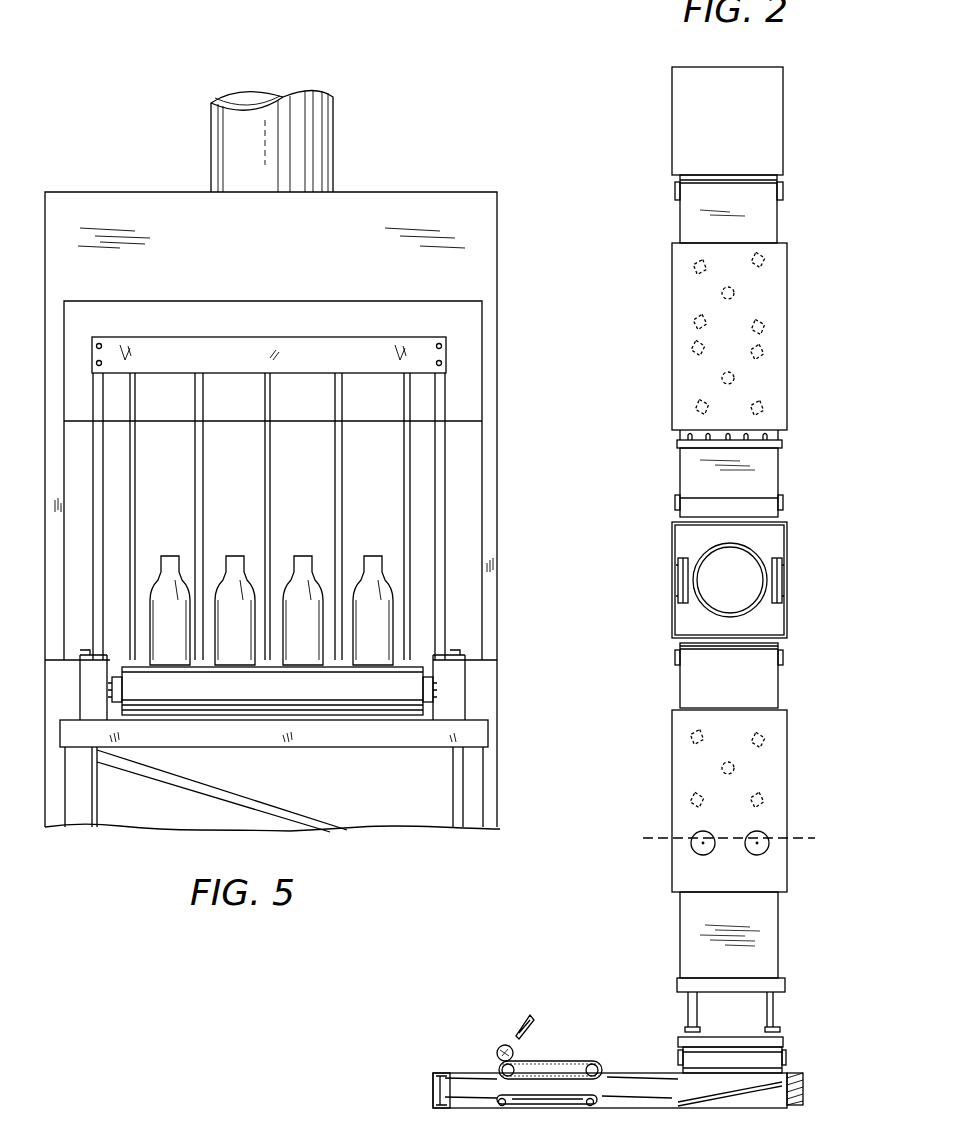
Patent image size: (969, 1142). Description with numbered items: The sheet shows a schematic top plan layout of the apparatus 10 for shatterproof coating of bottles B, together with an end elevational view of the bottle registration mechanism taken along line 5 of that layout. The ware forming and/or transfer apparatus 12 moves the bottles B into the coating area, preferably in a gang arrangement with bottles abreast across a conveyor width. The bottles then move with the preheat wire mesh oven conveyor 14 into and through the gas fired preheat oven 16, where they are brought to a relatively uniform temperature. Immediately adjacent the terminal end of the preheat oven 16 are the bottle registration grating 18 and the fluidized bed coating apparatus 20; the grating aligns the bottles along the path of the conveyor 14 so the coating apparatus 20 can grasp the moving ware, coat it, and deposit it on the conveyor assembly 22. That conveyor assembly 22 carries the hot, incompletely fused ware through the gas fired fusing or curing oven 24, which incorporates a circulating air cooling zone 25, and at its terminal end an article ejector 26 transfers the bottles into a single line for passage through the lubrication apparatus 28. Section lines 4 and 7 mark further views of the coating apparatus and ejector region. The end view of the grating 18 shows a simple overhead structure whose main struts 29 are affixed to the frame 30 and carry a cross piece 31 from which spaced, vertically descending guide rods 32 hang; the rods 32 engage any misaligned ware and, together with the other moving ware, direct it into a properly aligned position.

In FIG. 2, the apparatus 10 is at (815, 424).
In FIG. 2, the ware forming and/or transfer apparatus 12 is at (730, 131).
In FIG. 5, the preheat wire mesh oven conveyor 14 is at (317, 707).
In FIG. 2, the preheat wire mesh oven conveyor 14 is at (732, 211).
In FIG. 2, the gas fired preheat oven 16 is at (783, 304).
In FIG. 5, the bottle registration grating 18 is at (430, 170).
In FIG. 2, the bottle registration grating 18 is at (677, 443).
In FIG. 2, the fluidized bed coating apparatus 20 is at (790, 582).
In FIG. 2, the conveyor assembly 22 is at (732, 694).
In FIG. 2, the fusing or curing oven 24 is at (790, 762).
In FIG. 2, the circulating air cooling zone 25 is at (800, 835).
In FIG. 2, the article ejector 26 is at (787, 985).
In FIG. 2, the lubrication apparatus 28 is at (618, 1035).
In FIG. 5, the main struts 29 is at (492, 507).
In FIG. 5, the frame 30 is at (457, 703).
In FIG. 5, the cross piece 31 is at (407, 323).
In FIG. 5, the guide rods 32 is at (405, 462).
In FIG. 5, the bottles B is at (365, 577).
In FIG. 2, the section line 4- 4 is at (662, 683).
In FIG. 2, the section line 5- 5 is at (662, 517).
In FIG. 2, the section line 7- 7 is at (675, 1075).